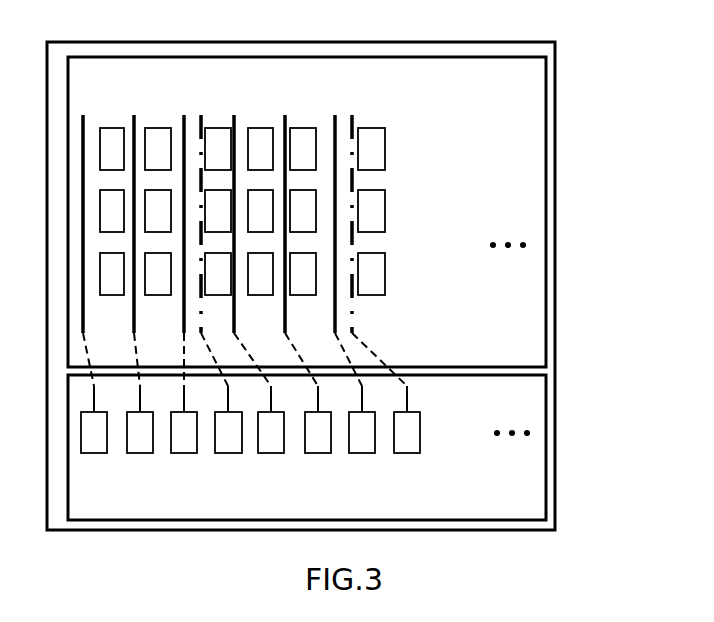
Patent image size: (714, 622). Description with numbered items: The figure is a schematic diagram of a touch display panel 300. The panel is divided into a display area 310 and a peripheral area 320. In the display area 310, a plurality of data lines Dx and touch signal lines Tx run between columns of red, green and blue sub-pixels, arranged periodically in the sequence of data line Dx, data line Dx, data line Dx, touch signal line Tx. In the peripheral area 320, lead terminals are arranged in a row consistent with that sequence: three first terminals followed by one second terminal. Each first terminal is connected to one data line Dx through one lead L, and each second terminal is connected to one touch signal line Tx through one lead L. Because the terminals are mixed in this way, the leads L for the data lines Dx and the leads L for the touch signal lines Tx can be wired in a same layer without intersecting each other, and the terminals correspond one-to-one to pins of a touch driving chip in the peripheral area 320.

The touch display panel 300 is at (467, 42).
The display area 310 is at (345, 221).
The peripheral area 320 is at (345, 447).
The data line Dx is at (83, 118).
The touch signal line Tx is at (201, 118).
The lead L is at (407, 404).